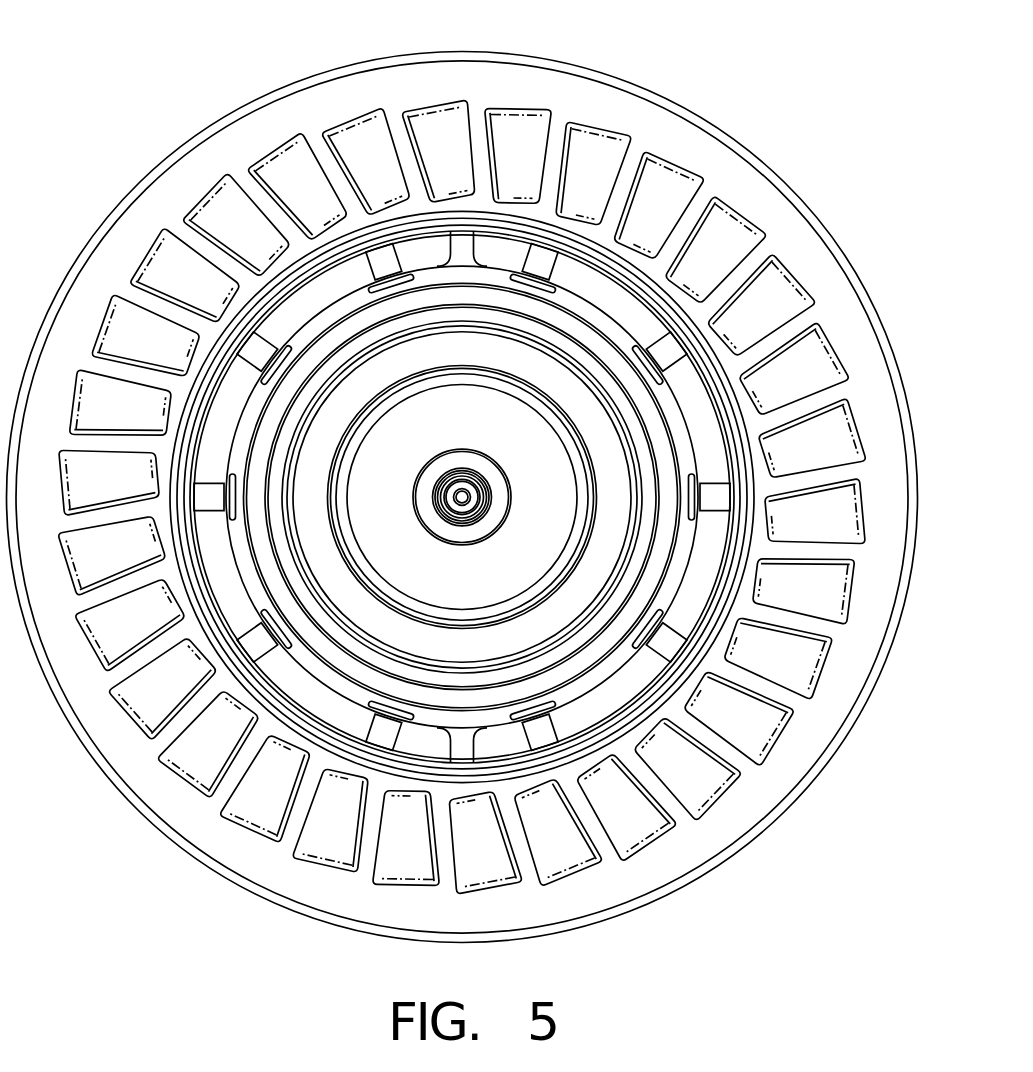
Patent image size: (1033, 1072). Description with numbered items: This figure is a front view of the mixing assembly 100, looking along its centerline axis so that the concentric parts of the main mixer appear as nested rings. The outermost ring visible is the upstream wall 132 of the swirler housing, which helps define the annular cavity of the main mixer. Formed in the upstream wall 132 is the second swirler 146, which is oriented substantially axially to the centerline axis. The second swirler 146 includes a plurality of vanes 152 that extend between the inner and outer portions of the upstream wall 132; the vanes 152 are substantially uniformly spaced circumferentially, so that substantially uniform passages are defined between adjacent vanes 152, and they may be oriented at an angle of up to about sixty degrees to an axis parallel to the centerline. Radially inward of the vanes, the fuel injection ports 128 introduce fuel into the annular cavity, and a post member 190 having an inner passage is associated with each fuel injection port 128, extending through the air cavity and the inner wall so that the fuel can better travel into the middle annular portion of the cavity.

The mixing assembly 100 is at (770, 128).
The upstream wall 132 is at (575, 90).
The second swirler 146 is at (773, 230).
The vanes 152 is at (770, 285).
The fuel injection ports 128 is at (655, 640).
The post member 190 is at (535, 735).